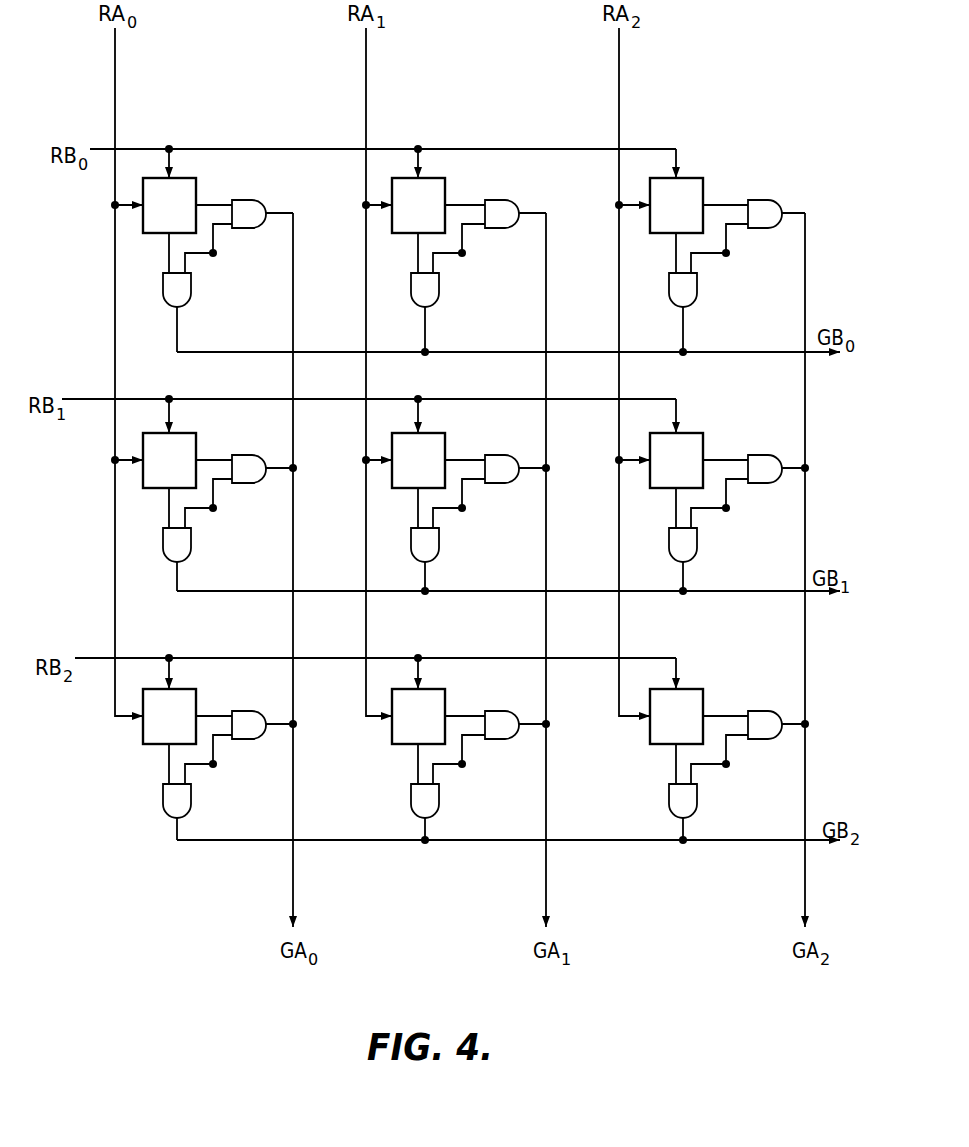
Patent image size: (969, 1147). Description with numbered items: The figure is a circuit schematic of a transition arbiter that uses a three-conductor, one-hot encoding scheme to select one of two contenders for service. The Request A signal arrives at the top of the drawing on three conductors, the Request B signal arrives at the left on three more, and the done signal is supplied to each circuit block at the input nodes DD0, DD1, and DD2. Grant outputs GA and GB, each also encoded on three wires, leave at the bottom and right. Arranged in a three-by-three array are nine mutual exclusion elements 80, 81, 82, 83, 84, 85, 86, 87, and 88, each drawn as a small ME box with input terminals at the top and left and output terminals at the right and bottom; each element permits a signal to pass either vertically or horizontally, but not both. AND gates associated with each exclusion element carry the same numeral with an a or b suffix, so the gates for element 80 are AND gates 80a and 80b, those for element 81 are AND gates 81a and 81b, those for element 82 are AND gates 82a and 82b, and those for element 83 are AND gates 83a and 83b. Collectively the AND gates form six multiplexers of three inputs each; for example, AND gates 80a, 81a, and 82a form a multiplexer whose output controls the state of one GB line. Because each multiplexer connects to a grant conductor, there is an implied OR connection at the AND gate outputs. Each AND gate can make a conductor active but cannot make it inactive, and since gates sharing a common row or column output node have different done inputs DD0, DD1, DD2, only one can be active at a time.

The mutual exclusion element 80 is at (195, 179).
The AND gate 80a is at (185, 305).
The AND gate 80b is at (250, 200).
The mutual exclusion element 81 is at (444, 179).
The AND gate 81a is at (433, 305).
The AND gate 81b is at (503, 200).
The mutual exclusion element 82 is at (702, 179).
The AND gate 82a is at (691, 305).
The AND gate 82b is at (766, 200).
The mutual exclusion element 83 is at (195, 434).
The AND gate 83a is at (185, 560).
The AND gate 83b is at (250, 455).
The mutual exclusion element 84 is at (444, 434).
The mutual exclusion element 85 is at (702, 434).
The mutual exclusion element 86 is at (193, 692).
The mutual exclusion element 87 is at (442, 692).
The mutual exclusion element 88 is at (700, 692).
The done input node DD0 is at (465, 256).
The done input node DD1 is at (729, 256).
The done input node DD2 is at (216, 256).